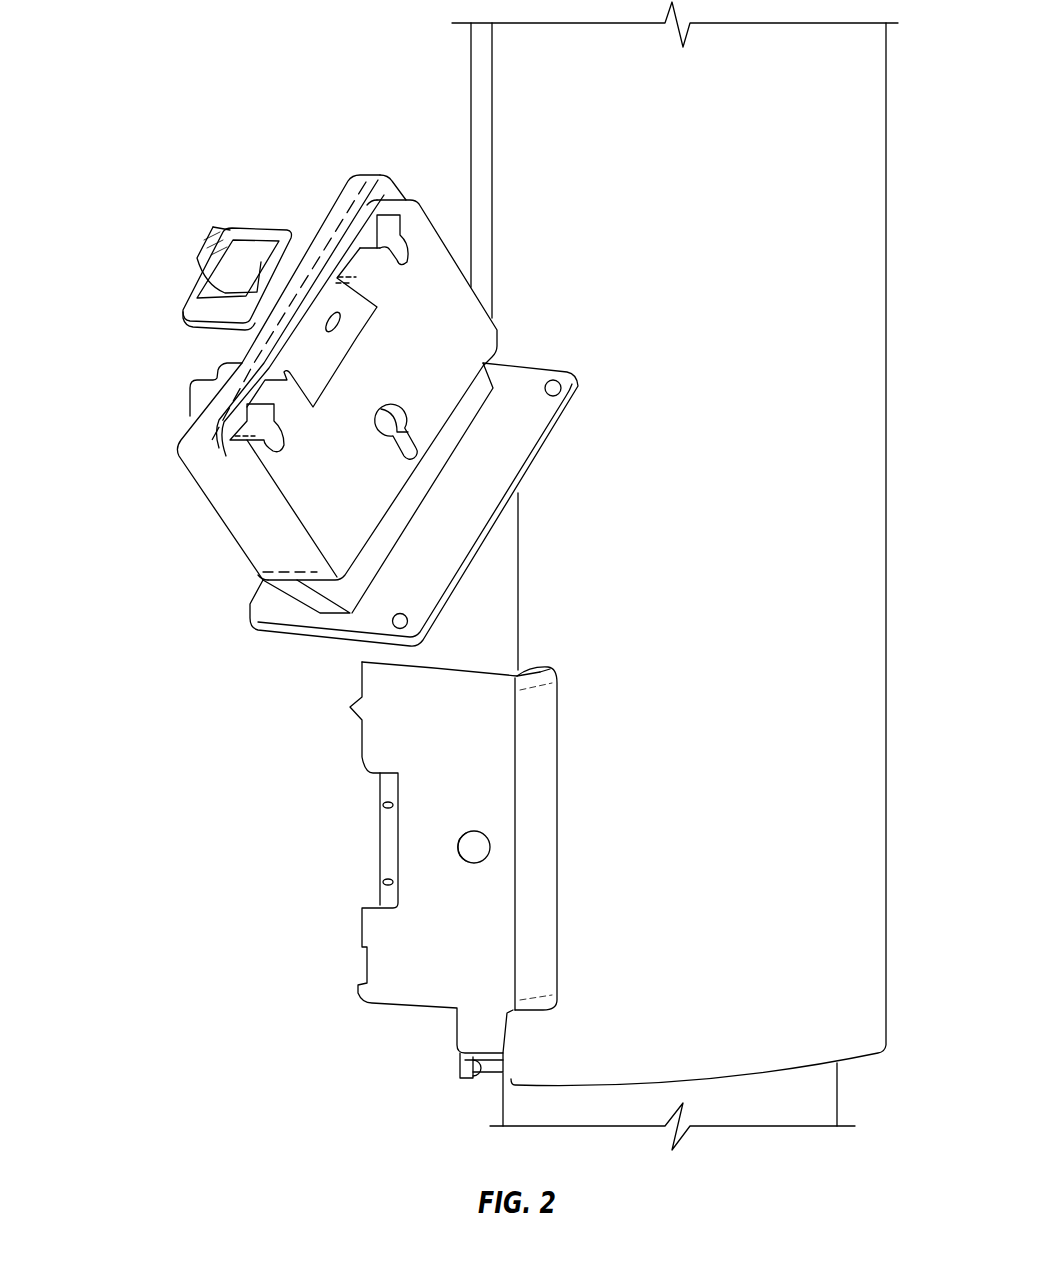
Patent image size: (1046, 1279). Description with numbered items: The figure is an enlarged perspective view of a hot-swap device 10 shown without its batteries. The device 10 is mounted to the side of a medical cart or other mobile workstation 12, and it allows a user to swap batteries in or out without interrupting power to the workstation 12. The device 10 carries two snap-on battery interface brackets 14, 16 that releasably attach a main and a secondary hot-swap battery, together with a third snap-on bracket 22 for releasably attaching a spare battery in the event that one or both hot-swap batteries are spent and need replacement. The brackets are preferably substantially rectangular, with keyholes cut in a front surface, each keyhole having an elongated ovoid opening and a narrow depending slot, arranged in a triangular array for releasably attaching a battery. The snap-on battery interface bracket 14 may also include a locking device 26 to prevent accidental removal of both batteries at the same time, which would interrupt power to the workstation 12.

The hot-swap device 10 is at (137, 171).
The mobile workstation 12 is at (788, 233).
The snap-on battery interface bracket 14 is at (355, 184).
The snap-on battery interface bracket 16 is at (440, 272).
The third snap-on bracket 22 is at (416, 967).
The locking device 26 is at (236, 252).